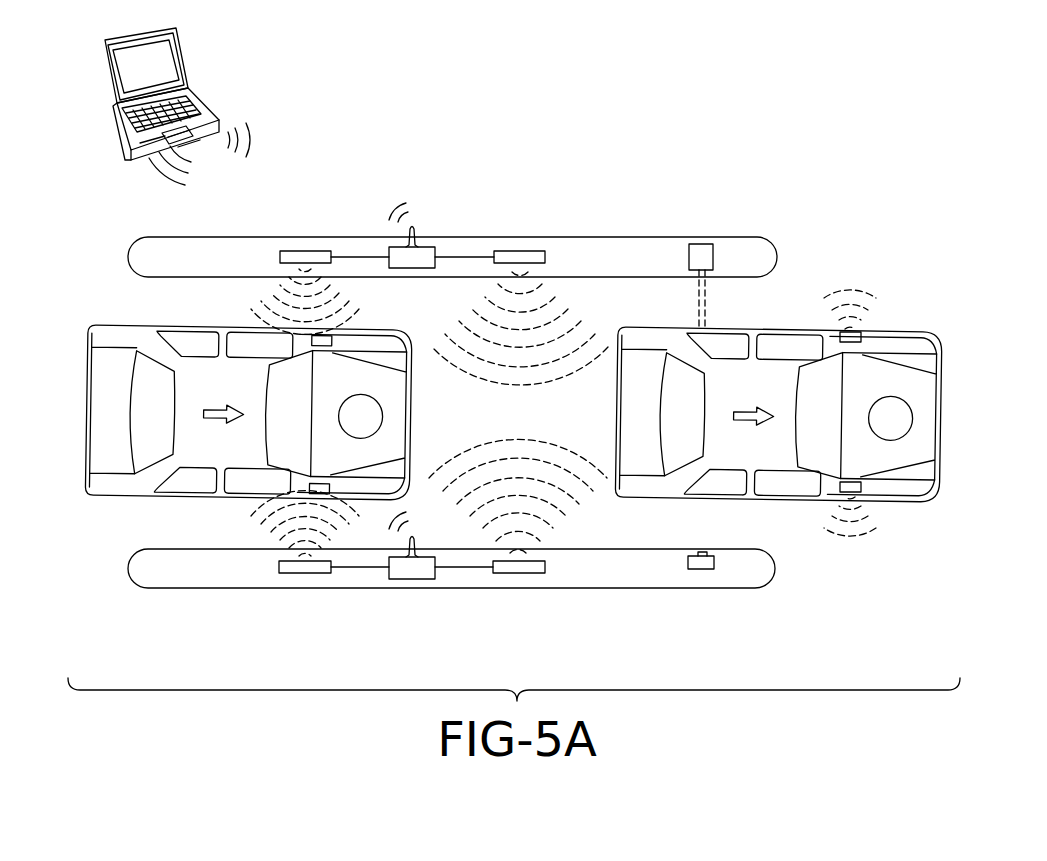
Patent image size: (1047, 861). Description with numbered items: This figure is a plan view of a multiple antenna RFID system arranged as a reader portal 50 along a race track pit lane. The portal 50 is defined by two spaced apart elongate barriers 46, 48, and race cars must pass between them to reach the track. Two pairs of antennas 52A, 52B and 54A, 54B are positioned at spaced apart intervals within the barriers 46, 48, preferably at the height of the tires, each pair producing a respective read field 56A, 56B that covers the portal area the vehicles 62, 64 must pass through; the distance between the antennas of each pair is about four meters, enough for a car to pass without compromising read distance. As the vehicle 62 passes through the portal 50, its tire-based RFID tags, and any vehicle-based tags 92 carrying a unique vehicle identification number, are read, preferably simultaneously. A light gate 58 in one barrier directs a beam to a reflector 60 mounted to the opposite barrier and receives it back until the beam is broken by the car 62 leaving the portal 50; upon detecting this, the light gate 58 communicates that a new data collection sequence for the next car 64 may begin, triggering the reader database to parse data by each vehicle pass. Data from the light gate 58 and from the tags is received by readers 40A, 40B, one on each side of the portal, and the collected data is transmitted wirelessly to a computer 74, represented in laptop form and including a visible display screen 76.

The computer 74 is at (130, 141).
The display screen 76 is at (168, 61).
The barrier 46 is at (770, 258).
The barrier 48 is at (765, 572).
The portal 50 is at (936, 268).
The antenna 52A is at (305, 258).
The antenna 52B is at (520, 258).
The antenna 54A is at (305, 573).
The antenna 54B is at (518, 573).
The reader 40A is at (415, 579).
The reader 40B is at (423, 258).
The read field 56A is at (270, 518).
The read field 56B is at (482, 344).
The light gate 58 is at (700, 258).
The reflector 60 is at (700, 569).
The vehicle 62 is at (945, 420).
The car 64 is at (100, 498).
The tag 92 is at (861, 334).